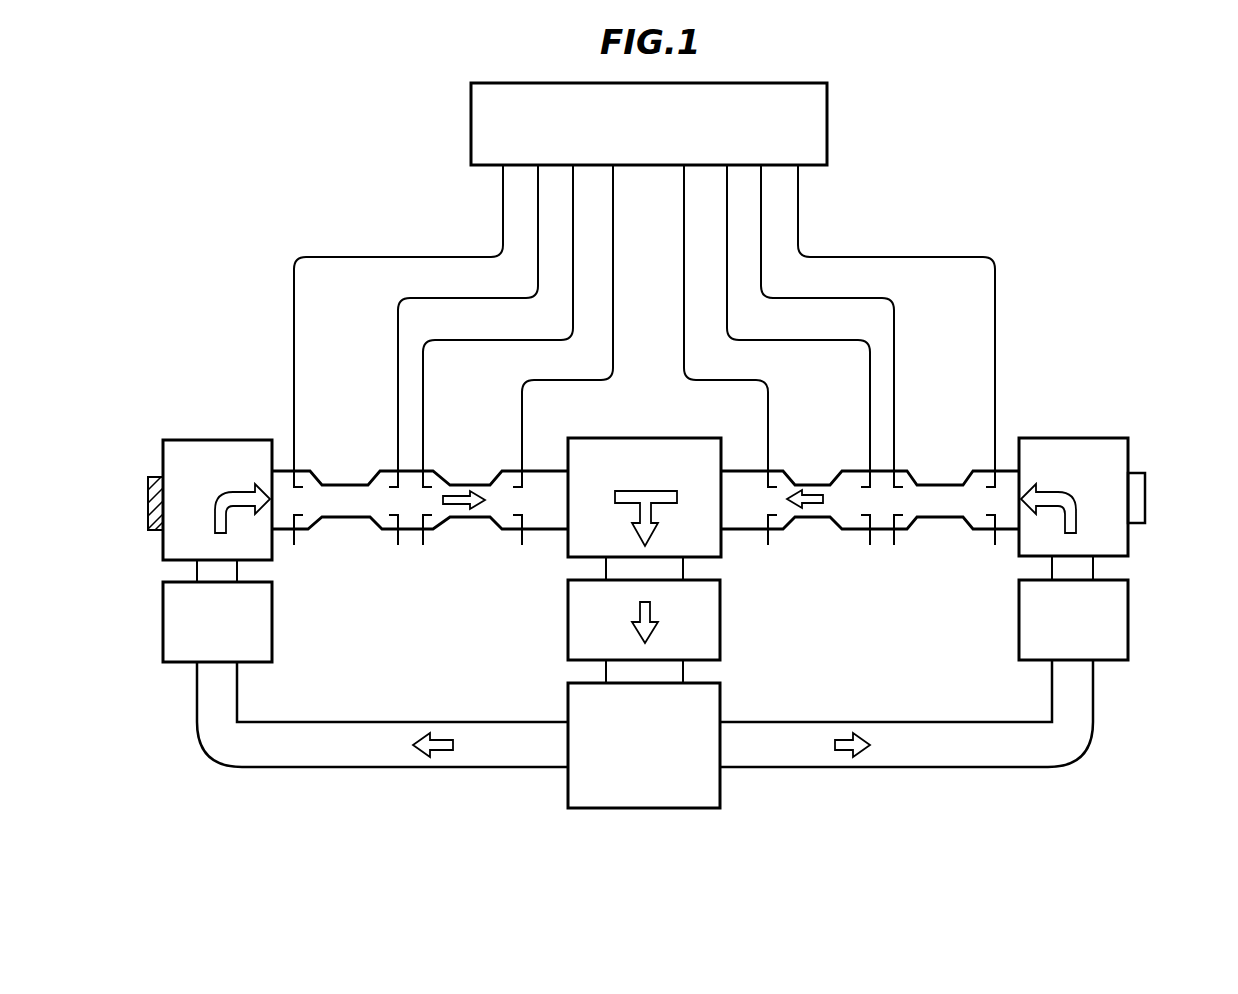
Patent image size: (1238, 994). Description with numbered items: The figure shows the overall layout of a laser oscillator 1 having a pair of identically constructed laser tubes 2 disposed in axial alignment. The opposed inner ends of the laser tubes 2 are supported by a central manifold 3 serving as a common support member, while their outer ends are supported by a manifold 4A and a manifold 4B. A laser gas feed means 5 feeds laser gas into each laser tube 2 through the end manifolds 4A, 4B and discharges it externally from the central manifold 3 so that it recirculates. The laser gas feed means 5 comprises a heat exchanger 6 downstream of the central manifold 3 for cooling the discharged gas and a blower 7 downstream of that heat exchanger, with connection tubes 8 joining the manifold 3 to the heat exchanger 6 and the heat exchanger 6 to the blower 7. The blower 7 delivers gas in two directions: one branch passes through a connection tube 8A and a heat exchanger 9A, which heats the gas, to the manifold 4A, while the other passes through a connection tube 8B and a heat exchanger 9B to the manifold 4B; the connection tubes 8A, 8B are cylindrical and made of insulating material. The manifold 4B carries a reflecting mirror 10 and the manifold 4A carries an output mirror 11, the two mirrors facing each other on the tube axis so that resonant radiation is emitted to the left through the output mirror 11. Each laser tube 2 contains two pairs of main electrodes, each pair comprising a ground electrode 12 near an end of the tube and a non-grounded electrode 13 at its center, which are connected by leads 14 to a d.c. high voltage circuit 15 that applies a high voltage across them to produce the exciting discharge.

The laser oscillator 1 is at (840, 203).
The laser tubes 2 is at (463, 460).
The manifold 3 is at (618, 438).
The manifold 4A is at (186, 440).
The manifold 4B is at (1070, 438).
The laser gas feed means 5 is at (405, 780).
The heat exchanger 6 is at (557, 618).
The blower 7 is at (733, 801).
The connection tubes 8 is at (697, 668).
The connection tube 8A is at (375, 722).
The connection tube 8B is at (868, 721).
The heat exchanger 9A is at (272, 640).
The heat exchanger 9B is at (1128, 625).
The reflecting mirror 10 is at (1145, 495).
The output mirror 11 is at (150, 498).
The ground electrode 12 is at (297, 471).
The non-grounded electrode 13 is at (423, 473).
The leads 14 is at (436, 298).
The d.c. high voltage circuit 15 is at (471, 108).